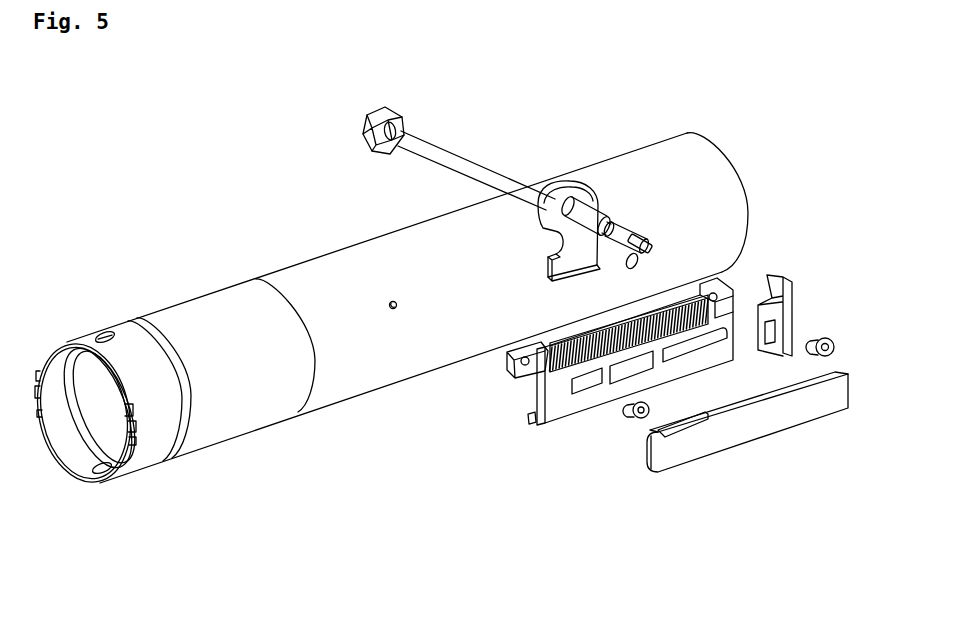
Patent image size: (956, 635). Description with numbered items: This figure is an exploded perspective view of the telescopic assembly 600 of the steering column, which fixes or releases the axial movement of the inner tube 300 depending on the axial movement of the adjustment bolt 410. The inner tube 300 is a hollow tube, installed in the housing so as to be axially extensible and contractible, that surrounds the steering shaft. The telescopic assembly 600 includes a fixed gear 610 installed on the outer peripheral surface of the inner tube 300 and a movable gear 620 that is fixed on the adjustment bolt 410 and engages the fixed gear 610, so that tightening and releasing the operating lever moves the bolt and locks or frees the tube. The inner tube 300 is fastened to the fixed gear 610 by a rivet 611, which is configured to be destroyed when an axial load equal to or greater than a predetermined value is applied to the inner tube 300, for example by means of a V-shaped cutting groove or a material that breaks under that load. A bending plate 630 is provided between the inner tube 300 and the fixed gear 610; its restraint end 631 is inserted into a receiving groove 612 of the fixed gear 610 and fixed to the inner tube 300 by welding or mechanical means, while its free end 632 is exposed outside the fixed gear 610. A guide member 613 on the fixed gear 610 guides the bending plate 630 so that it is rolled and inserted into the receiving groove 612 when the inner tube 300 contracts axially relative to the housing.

The inner tube 300 is at (240, 420).
The adjustment bolt 410 is at (447, 151).
The telescopic assembly 600 is at (480, 479).
The fixed gear 610 is at (583, 404).
The rivet 611 is at (808, 353).
The receiving groove 612 is at (537, 391).
The guide member 613 is at (540, 425).
The movable gear 620 is at (547, 262).
The bending plate 630 is at (707, 437).
The restraint end 631 is at (643, 422).
The free end 632 is at (833, 403).